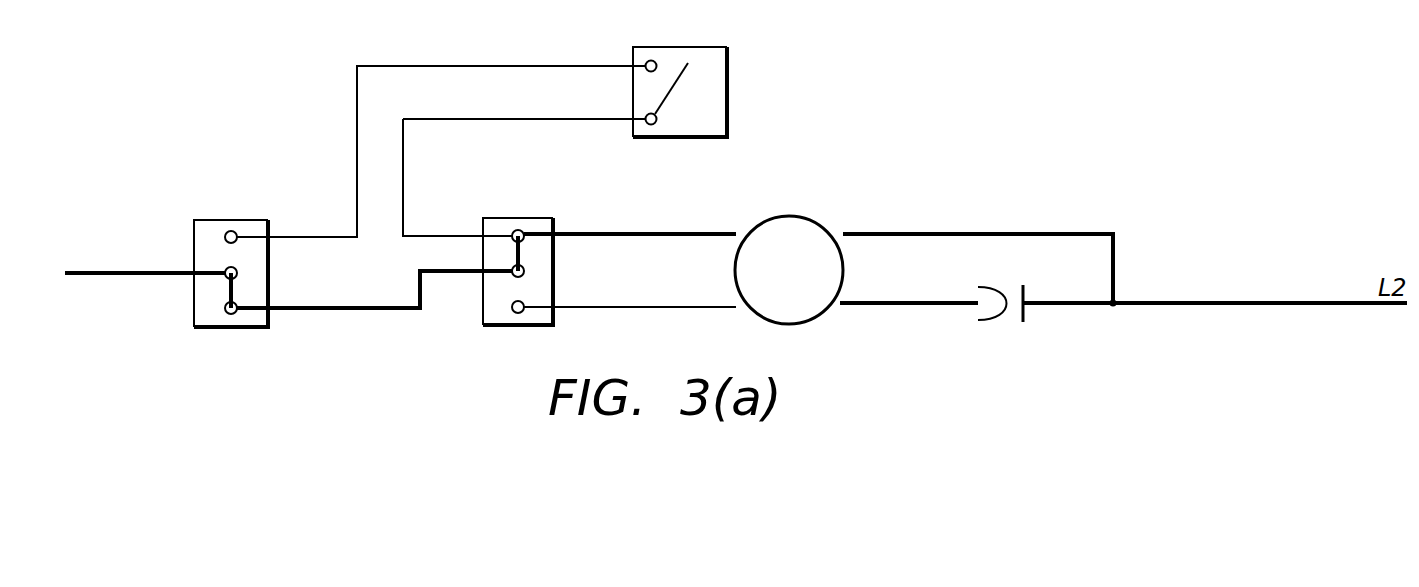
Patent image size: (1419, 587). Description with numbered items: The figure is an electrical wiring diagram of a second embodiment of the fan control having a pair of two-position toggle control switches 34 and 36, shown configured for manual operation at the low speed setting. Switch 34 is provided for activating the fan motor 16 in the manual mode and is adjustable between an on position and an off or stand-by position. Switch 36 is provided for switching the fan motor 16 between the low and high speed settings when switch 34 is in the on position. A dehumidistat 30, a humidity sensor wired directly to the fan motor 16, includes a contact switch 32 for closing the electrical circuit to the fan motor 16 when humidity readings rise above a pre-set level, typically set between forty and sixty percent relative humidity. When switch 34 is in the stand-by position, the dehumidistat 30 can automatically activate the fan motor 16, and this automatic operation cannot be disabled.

The fan motor 16 is at (770, 216).
The dehumidistat 30 is at (728, 62).
The contact switch 32 is at (668, 66).
The two-position toggle control switch 34 is at (194, 245).
The two-position toggle control switch 36 is at (483, 316).